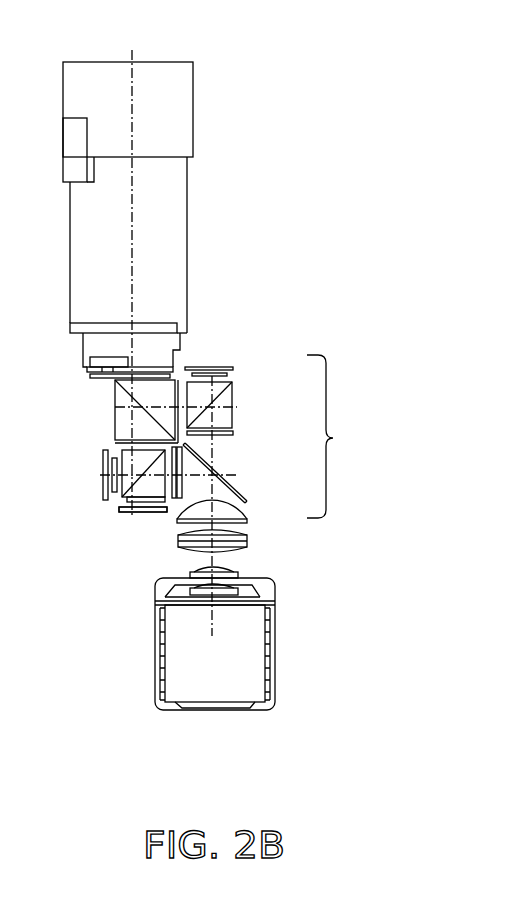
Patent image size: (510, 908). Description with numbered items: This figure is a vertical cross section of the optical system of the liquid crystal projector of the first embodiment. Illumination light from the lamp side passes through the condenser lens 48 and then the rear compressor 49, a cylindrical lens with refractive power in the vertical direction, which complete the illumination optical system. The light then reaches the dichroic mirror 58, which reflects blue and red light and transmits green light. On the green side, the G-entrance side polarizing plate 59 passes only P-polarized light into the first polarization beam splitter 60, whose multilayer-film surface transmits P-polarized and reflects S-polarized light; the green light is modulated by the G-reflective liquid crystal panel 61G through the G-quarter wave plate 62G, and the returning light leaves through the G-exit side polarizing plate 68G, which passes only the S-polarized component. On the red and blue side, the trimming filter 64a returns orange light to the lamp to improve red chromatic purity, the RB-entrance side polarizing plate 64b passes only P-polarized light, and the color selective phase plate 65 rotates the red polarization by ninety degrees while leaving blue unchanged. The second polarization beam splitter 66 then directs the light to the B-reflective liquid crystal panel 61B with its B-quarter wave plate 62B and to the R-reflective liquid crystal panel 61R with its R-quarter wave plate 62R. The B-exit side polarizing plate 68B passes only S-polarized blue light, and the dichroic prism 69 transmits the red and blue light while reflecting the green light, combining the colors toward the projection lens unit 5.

The projection lens unit 5 is at (173, 268).
The dichroic prism 69 is at (120, 404).
The G-exit side polarizing plate 68G is at (181, 376).
The B-exit side polarizing plate 68B is at (120, 440).
The second polarization beam splitter 66 is at (130, 460).
The B-reflective liquid crystal panel 61B is at (102, 465).
The B-quarter wave plate 62B is at (112, 494).
The R-reflective liquid crystal panel 61R is at (120, 512).
The R-quarter wave plate 62R is at (122, 504).
The color selective phase plate 65 is at (145, 512).
The trimming filter 64a is at (180, 499).
The RB-entrance side polarizing plate 64b is at (174, 499).
The first polarization beam splitter 60 is at (225, 417).
The G-reflective liquid crystal panel 61G is at (224, 366).
The G-quarter wave plate 62G is at (229, 375).
The G-entrance side polarizing plate 59 is at (234, 437).
The dichroic mirror 58 is at (248, 504).
The rear compressor 49 is at (248, 518).
The condenser lens 48 is at (248, 542).